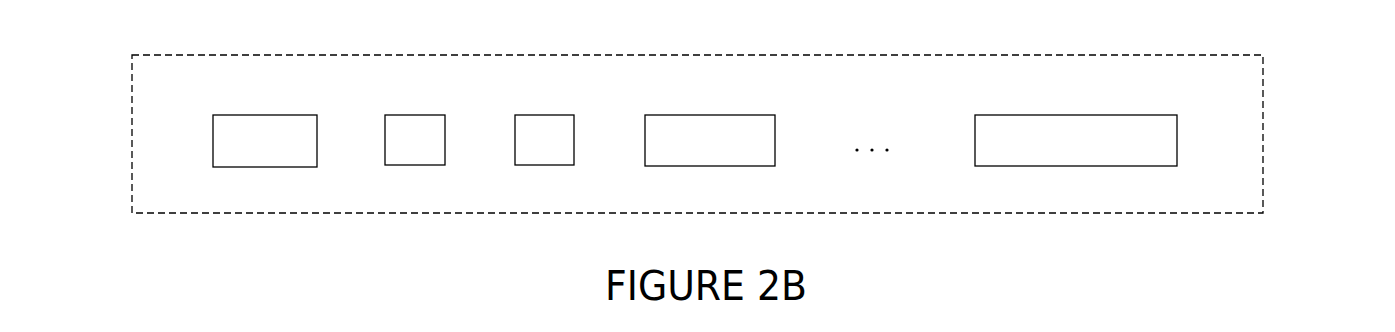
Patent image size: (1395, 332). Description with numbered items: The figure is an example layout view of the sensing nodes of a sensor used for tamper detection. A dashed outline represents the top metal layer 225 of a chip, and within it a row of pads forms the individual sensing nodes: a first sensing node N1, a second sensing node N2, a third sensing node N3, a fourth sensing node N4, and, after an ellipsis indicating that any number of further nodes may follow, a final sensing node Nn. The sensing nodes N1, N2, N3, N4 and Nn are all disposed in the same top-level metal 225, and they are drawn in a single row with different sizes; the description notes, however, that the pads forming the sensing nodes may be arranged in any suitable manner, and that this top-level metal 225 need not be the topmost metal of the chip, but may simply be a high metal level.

The top metal layer 225 is at (1263, 92).
The sensing node N1 is at (265, 141).
The sensing node N2 is at (415, 140).
The sensing node N3 is at (544, 140).
The sensing node N4 is at (710, 140).
The sensing node Nn is at (1076, 140).